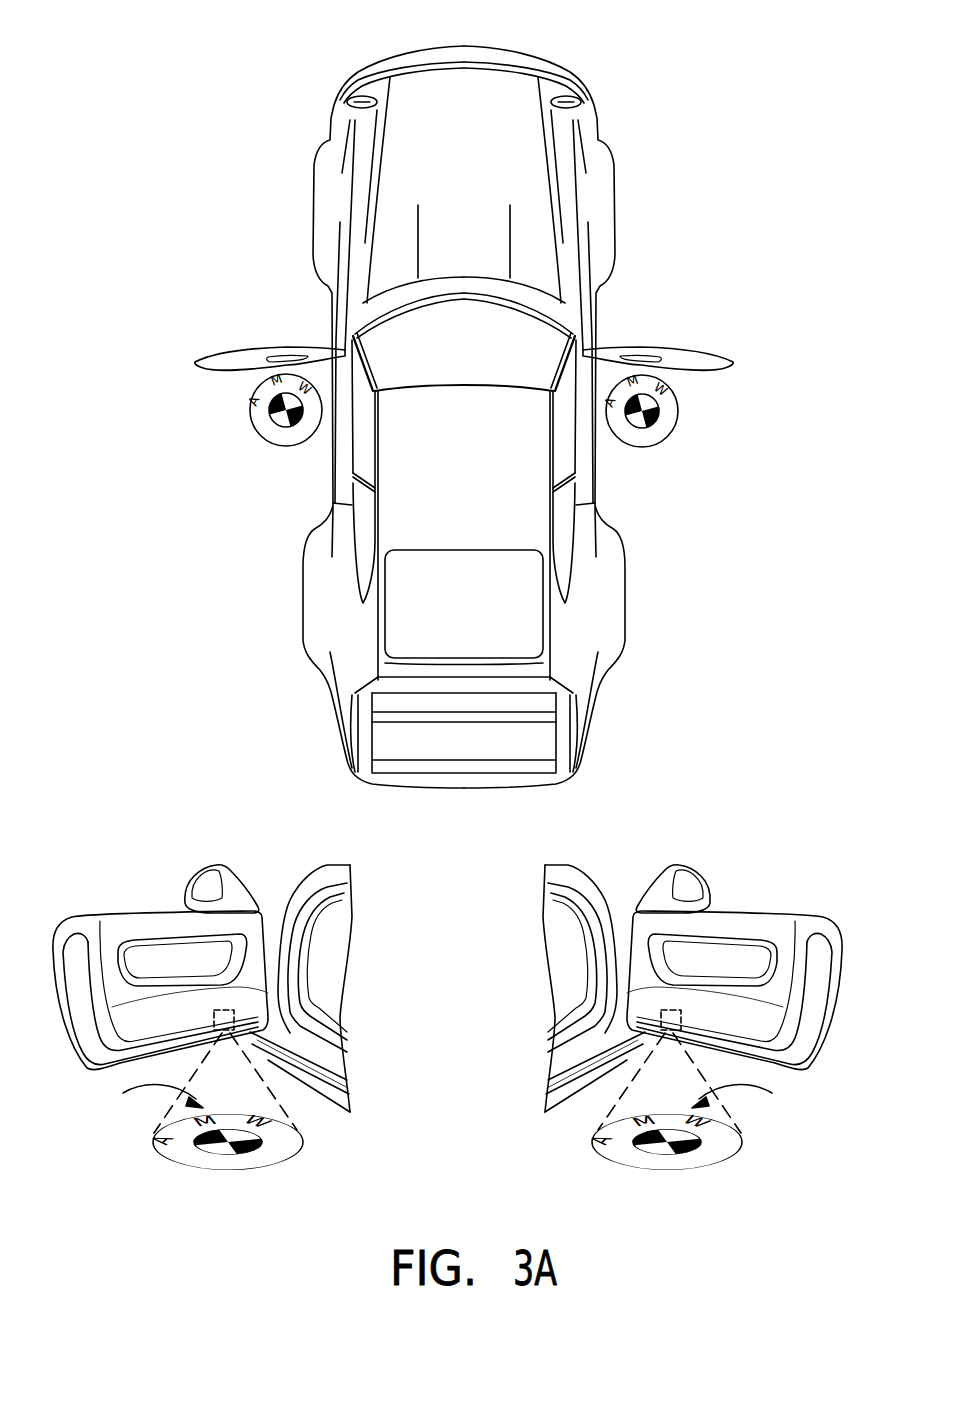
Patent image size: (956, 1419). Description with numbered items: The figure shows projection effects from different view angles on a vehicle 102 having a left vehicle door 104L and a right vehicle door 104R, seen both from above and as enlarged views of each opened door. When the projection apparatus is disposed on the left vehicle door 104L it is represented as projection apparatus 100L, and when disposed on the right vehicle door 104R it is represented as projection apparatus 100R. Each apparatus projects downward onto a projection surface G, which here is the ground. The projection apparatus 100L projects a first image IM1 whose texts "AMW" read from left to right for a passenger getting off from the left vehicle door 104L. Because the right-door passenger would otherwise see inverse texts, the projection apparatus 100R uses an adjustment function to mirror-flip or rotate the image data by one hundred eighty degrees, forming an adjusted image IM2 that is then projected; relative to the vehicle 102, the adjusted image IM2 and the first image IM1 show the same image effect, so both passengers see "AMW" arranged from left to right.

The vehicle 102 is at (532, 60).
The left vehicle door 104L is at (240, 352).
The right vehicle door 104R is at (690, 352).
The first image IM1 is at (250, 418).
The adjusted image IM2 is at (668, 418).
The projection apparatus 100L is at (236, 1012).
The projection apparatus 100R is at (659, 1012).
The projection surface G is at (442, 1099).